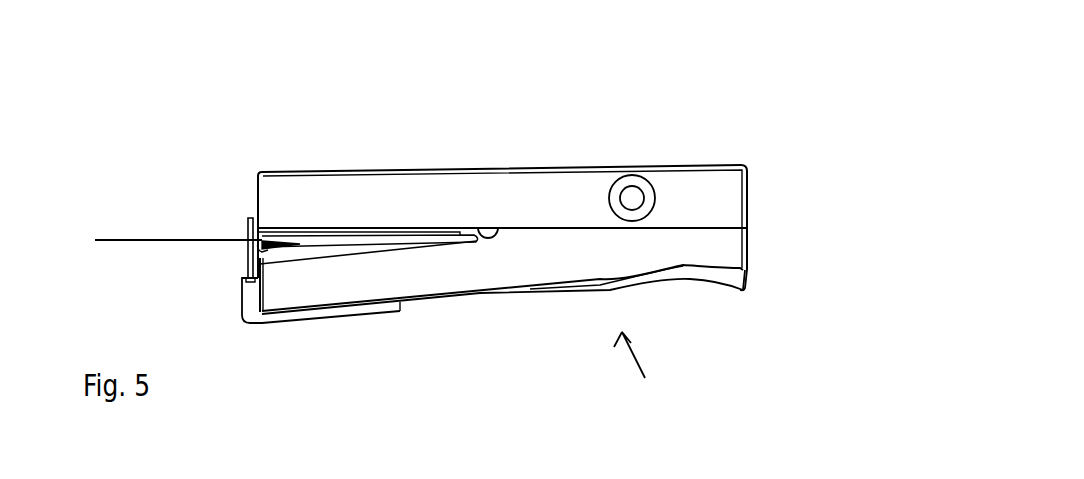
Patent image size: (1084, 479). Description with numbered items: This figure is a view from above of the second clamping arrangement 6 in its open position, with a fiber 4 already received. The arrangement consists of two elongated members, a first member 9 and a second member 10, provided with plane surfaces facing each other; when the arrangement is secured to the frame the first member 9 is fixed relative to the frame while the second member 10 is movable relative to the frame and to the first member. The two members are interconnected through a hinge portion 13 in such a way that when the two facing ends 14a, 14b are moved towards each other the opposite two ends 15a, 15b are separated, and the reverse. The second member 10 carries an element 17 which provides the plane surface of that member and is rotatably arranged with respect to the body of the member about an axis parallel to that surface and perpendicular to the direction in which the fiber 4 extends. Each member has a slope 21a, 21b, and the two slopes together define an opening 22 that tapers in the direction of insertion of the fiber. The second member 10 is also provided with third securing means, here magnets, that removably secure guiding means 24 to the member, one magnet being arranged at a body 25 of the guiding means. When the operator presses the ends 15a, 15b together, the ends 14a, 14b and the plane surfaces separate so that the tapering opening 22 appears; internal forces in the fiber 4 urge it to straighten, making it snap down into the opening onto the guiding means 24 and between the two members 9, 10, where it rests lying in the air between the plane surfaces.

The fiber 4 is at (165, 240).
The second clamping arrangement 6 is at (637, 382).
The first member 9 is at (715, 183).
The second member 10 is at (728, 250).
The hinge portion 13 is at (489, 228).
The end of first member 14a is at (285, 203).
The end of second member 14b is at (303, 282).
The opposite end of first member 15a is at (725, 203).
The opposite end of second member 15b is at (700, 250).
The element 17 is at (273, 247).
The slope of first member 21a is at (400, 228).
The slope of second member 21b is at (410, 242).
The opening 22 is at (258, 247).
The guiding means 24 is at (252, 305).
The body of guiding means 25 is at (250, 290).